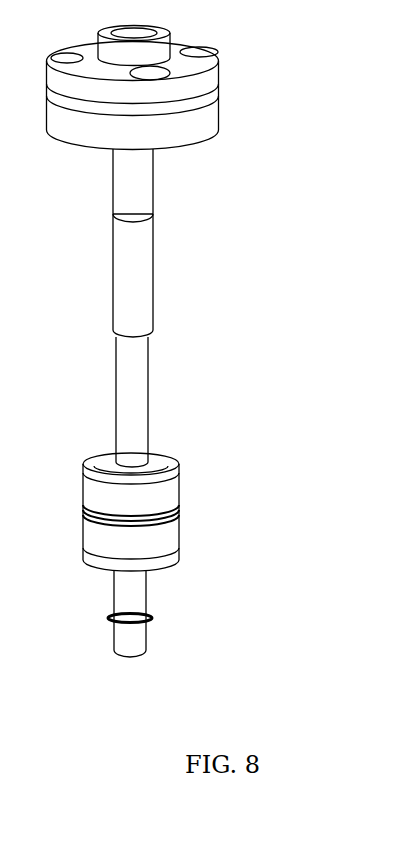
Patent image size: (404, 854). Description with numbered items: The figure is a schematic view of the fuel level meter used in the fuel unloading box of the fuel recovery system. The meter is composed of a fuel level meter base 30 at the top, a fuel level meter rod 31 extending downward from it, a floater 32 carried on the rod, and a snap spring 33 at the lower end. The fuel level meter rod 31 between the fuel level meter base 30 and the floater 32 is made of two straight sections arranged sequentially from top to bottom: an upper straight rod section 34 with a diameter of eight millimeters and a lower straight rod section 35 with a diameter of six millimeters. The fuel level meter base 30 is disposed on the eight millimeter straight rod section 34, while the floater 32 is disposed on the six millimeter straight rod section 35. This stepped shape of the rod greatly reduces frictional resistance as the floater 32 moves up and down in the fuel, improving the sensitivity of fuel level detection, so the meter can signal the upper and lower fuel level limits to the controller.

The fuel level meter base 30 is at (180, 130).
The 8 mm straight rod section 34 is at (138, 268).
The 6 mm straight rod section 35 is at (125, 403).
The floater 32 is at (155, 512).
The fuel level meter rod 31 is at (128, 607).
The snap spring 33 is at (152, 620).